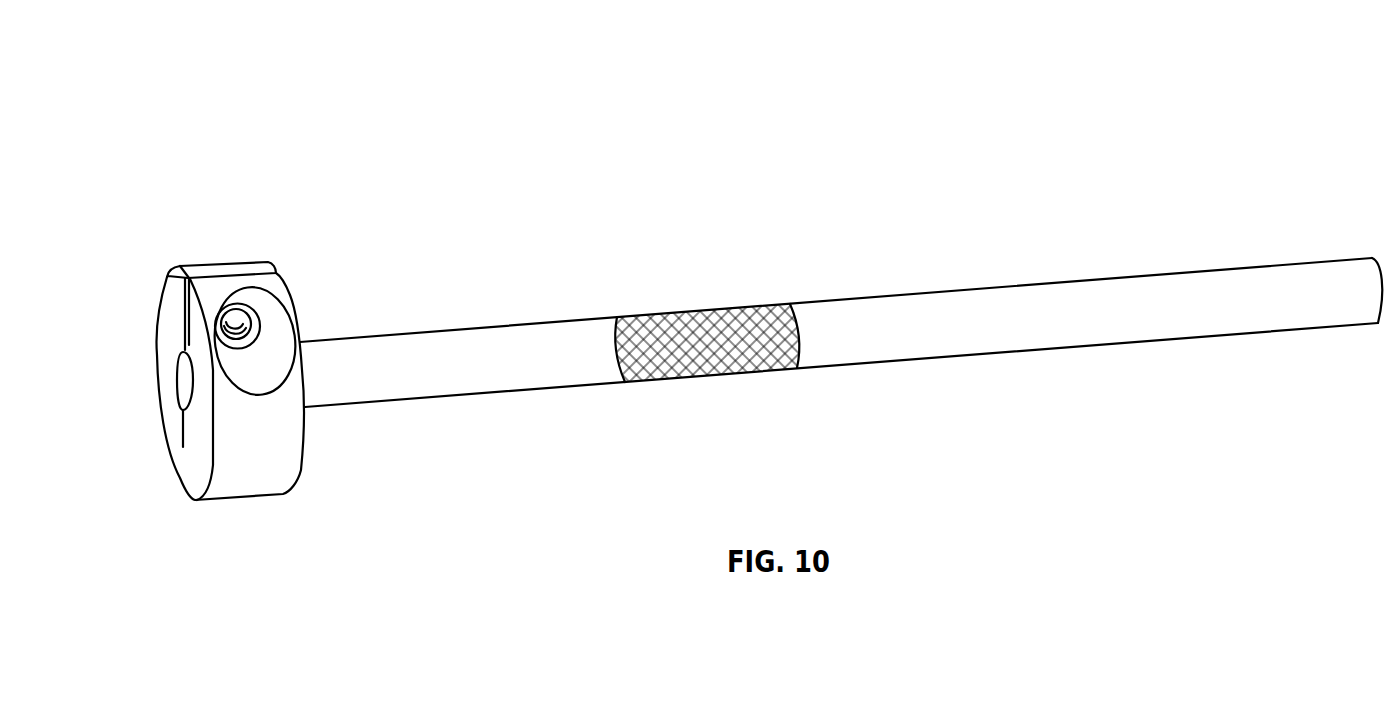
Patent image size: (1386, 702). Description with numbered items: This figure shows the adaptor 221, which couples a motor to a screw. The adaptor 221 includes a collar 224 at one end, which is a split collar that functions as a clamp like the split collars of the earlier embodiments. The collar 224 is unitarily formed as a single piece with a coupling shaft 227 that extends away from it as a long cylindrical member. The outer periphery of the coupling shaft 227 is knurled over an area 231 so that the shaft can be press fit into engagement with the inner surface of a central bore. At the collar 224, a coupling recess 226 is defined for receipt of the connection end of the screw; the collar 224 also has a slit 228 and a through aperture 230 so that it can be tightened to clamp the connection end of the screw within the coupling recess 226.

The adaptor 221 is at (871, 158).
The collar 224 is at (233, 481).
The coupling recess 226 is at (173, 375).
The coupling shaft 227 is at (1047, 330).
The slit 228 is at (185, 302).
The fastener hole 230 is at (265, 373).
The knurled area 231 is at (707, 302).